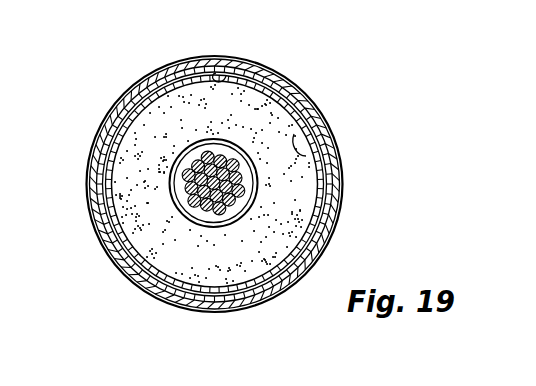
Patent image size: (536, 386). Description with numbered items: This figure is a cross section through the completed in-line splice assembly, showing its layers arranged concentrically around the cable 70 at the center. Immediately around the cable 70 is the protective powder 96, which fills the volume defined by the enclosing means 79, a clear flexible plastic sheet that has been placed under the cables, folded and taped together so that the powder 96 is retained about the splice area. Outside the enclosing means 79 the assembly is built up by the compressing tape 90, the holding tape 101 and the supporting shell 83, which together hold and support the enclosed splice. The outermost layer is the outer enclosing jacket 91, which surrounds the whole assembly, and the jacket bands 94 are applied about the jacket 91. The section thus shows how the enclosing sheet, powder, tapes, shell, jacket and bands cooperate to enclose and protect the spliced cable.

The cable 70 is at (182, 225).
The enclosing means 79 is at (226, 76).
The supporting shell 83 is at (335, 222).
The tape 90 is at (292, 102).
The outer enclosing jacket 91 is at (318, 110).
The jacket bands 94 is at (337, 157).
The protective powder 96 is at (99, 238).
The holding tape 101 is at (330, 182).